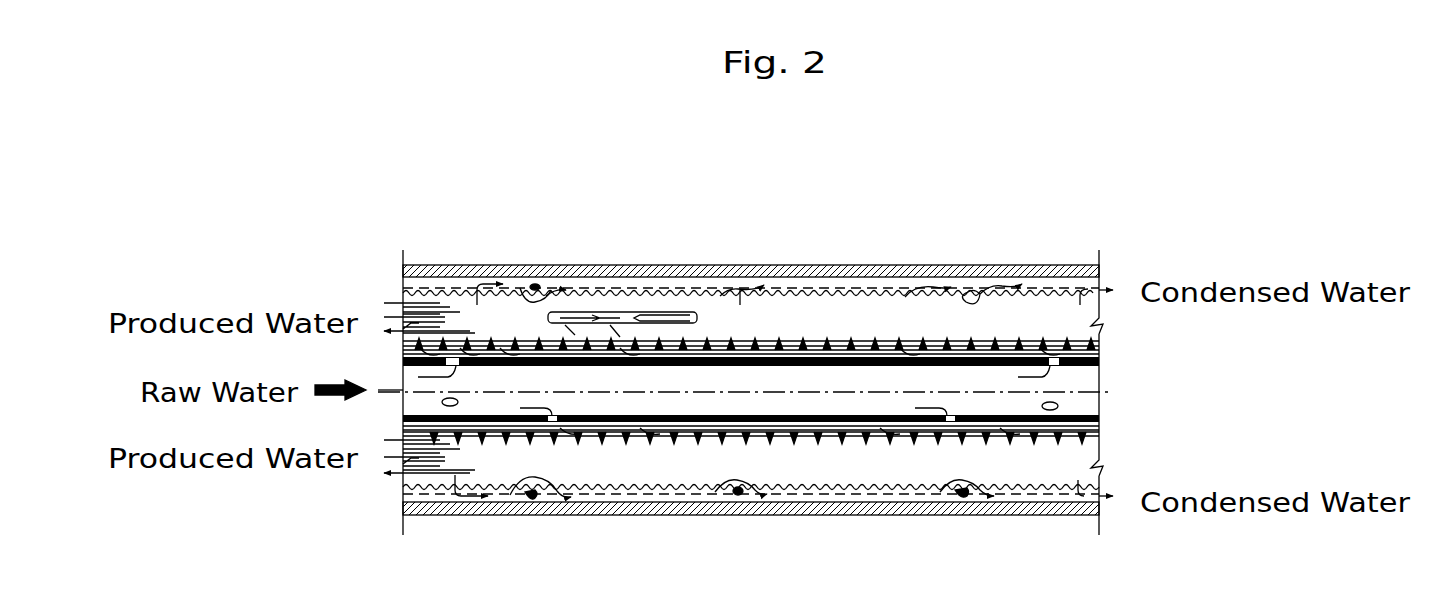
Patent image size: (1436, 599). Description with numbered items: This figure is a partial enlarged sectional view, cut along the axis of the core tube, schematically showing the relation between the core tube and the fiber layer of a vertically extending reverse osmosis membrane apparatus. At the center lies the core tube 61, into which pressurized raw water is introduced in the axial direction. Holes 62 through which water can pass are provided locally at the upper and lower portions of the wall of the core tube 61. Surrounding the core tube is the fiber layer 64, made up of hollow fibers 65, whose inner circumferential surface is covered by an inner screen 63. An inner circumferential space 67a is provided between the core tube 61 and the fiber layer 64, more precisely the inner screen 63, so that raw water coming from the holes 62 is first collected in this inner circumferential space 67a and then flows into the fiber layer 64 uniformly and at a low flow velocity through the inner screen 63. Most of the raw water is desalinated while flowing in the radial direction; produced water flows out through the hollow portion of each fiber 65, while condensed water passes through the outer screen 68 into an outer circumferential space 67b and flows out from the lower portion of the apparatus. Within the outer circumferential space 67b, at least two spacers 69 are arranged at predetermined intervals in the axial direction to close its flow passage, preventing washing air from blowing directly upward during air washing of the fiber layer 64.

The core tube 61 is at (1094, 375).
The holes 62 is at (1066, 408).
The inner screen 63 is at (1093, 344).
The fiber layer 64 is at (803, 325).
The fiber 65 is at (624, 310).
The inner circumferential space 67a is at (1094, 432).
The outer circumferential space 67b is at (892, 290).
The outer screen 68 is at (955, 292).
The spacers 69 is at (737, 290).